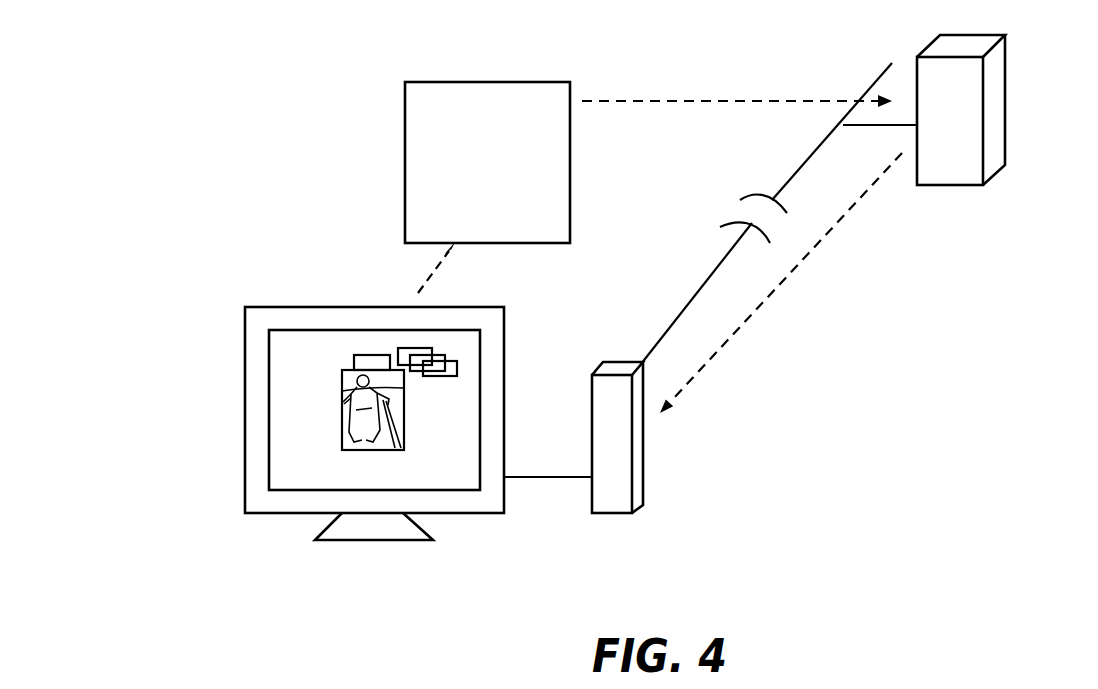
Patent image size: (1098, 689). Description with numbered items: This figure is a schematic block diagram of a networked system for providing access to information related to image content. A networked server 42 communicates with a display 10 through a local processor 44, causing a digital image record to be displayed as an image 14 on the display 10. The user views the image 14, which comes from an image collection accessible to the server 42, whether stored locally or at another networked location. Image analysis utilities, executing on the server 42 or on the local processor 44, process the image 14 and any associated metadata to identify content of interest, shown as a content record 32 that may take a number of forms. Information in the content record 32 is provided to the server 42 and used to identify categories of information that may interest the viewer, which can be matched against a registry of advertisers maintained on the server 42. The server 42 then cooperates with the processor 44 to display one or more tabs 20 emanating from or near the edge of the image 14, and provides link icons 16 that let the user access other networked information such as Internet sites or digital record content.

The display 10 is at (270, 306).
The image 14 is at (340, 413).
The link icons 16 is at (448, 358).
The tabs 20 is at (372, 353).
The content record 32 is at (462, 82).
The networked server 42 is at (1005, 81).
The local processor 44 is at (628, 473).